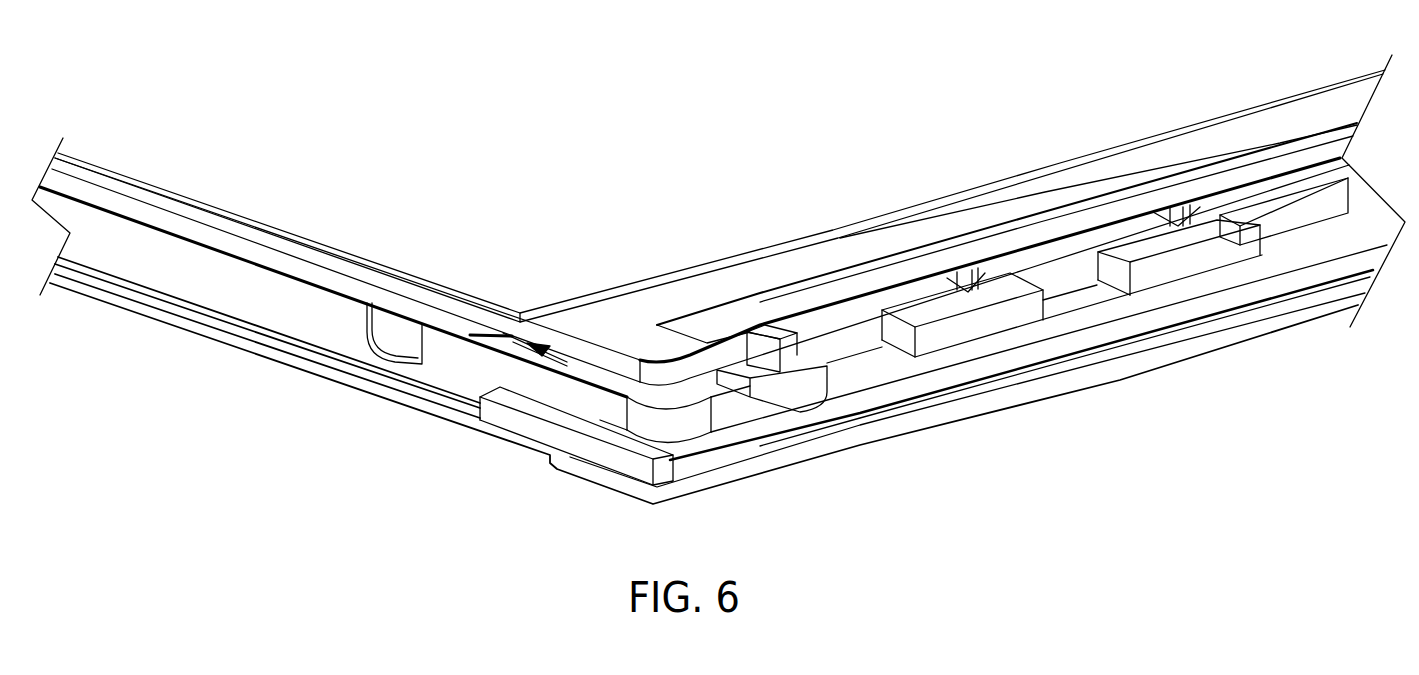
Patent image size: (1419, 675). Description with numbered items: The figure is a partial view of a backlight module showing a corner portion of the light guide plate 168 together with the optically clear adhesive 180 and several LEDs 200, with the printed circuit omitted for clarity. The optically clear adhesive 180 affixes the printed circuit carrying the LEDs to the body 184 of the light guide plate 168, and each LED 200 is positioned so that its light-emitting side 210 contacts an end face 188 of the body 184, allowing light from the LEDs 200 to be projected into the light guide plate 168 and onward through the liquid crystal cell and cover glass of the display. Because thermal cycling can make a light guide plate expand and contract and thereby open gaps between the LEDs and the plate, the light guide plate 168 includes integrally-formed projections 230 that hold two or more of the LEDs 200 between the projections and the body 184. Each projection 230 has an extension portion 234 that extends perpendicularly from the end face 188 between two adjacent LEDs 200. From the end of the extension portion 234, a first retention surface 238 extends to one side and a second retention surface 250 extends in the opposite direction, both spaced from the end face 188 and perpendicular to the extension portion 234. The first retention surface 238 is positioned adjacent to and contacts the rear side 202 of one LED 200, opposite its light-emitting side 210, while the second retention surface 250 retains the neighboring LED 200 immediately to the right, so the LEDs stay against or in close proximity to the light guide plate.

The light guide plate 168 is at (537, 348).
The optically clear adhesive 180 is at (850, 283).
The body 184 is at (608, 322).
The end face 188 is at (706, 302).
The LED 200 is at (833, 347).
The rear side 202 is at (853, 322).
The light-emitting side 210 is at (738, 340).
The projection 230 is at (977, 323).
The extension portion 234 is at (921, 295).
The first retention surface 238 is at (888, 290).
The second retention surface 250 is at (977, 277).